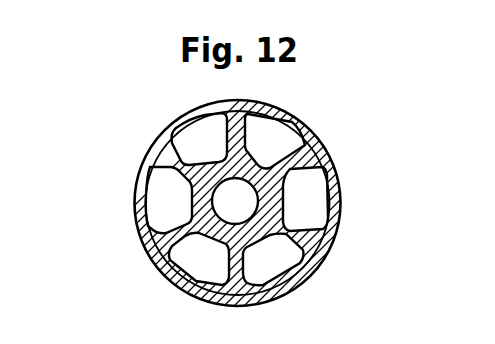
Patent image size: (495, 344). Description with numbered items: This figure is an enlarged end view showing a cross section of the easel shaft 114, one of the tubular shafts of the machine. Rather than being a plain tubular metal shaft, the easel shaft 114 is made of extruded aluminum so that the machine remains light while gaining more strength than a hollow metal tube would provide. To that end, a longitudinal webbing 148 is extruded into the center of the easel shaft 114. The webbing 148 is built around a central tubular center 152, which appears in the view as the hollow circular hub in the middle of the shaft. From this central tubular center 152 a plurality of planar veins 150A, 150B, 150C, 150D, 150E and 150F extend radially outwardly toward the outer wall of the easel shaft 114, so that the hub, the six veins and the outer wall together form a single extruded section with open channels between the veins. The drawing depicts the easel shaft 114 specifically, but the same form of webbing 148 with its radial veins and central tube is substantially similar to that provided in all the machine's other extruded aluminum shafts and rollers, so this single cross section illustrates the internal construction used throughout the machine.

The easel shaft 114 is at (344, 207).
The longitudinal webbing 148 is at (282, 236).
The central tubular center 152 is at (194, 206).
The planar vein 150A is at (255, 283).
The planar vein 150B is at (305, 172).
The planar vein 150C is at (262, 130).
The planar vein 150D is at (188, 156).
The planar vein 150E is at (162, 221).
The planar vein 150F is at (228, 278).